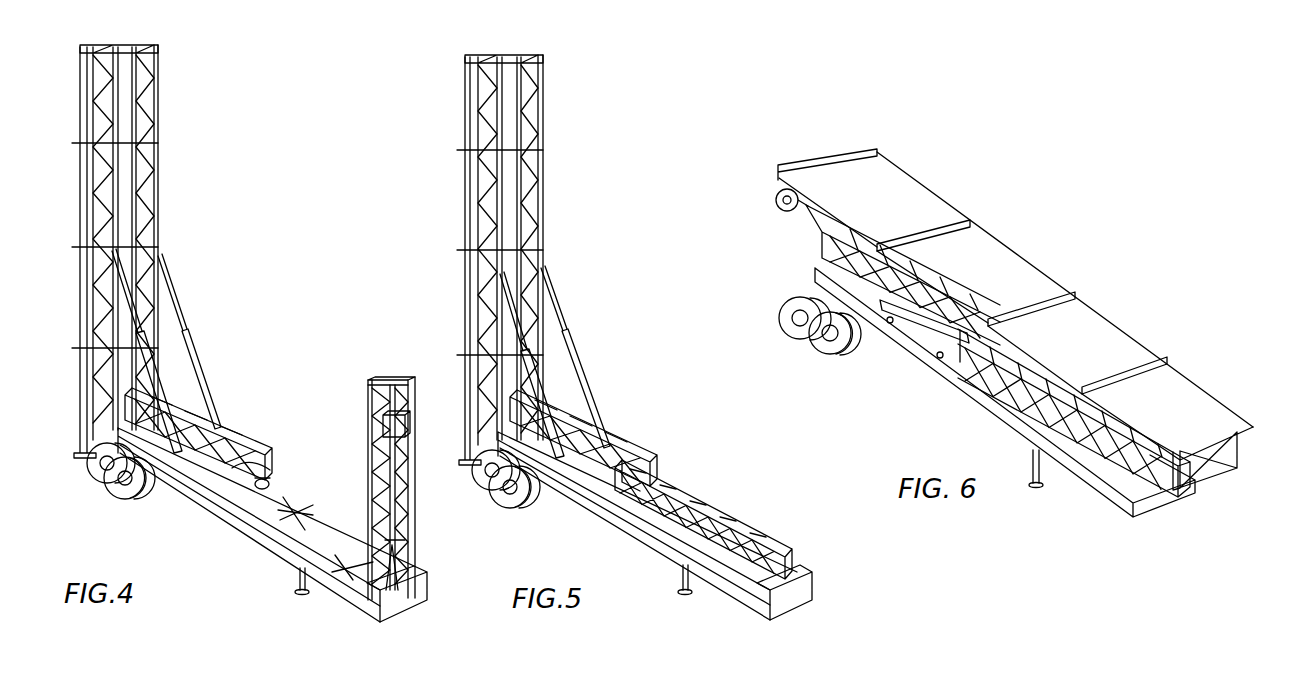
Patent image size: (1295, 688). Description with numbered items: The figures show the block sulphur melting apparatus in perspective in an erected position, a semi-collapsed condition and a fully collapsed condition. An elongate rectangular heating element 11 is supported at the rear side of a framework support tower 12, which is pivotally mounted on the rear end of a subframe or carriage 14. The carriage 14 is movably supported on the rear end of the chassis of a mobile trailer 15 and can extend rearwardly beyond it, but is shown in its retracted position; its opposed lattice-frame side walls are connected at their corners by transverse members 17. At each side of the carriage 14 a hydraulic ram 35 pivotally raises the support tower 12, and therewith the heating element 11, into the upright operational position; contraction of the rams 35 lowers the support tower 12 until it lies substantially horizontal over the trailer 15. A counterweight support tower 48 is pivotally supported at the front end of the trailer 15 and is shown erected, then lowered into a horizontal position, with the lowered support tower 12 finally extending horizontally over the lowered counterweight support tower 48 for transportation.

In FIG. 4, the heating element 11 is at (81, 84).
In FIG. 5, the heating element 11 is at (465, 145).
In FIG. 6, the heating element 11 is at (968, 272).
In FIG. 4, the support tower 12 is at (168, 163).
In FIG. 5, the support tower 12 is at (556, 176).
In FIG. 6, the support tower 12 is at (788, 245).
In FIG. 4, the carriage 14 is at (261, 426).
In FIG. 5, the carriage 14 is at (634, 428).
In FIG. 4, the trailer 15 is at (245, 542).
In FIG. 5, the trailer 15 is at (642, 526).
In FIG. 6, the trailer 15 is at (910, 384).
In FIG. 4, the transverse members 17 is at (274, 487).
In FIG. 5, the hydraulic ram 35 is at (603, 368).
In FIG. 4, the counterweight support tower 48 is at (424, 492).
In FIG. 5, the counterweight support tower 48 is at (738, 499).
In FIG. 6, the counterweight support tower 48 is at (1012, 412).